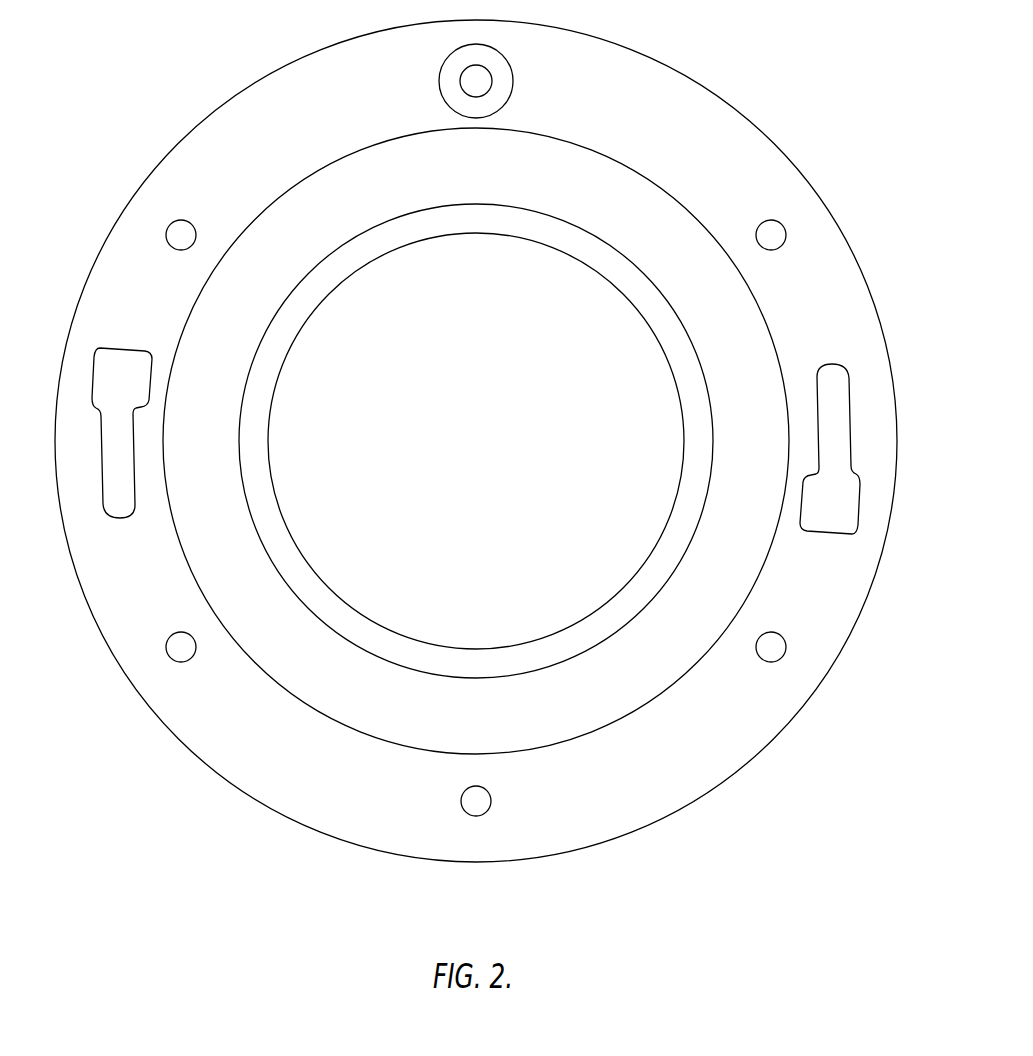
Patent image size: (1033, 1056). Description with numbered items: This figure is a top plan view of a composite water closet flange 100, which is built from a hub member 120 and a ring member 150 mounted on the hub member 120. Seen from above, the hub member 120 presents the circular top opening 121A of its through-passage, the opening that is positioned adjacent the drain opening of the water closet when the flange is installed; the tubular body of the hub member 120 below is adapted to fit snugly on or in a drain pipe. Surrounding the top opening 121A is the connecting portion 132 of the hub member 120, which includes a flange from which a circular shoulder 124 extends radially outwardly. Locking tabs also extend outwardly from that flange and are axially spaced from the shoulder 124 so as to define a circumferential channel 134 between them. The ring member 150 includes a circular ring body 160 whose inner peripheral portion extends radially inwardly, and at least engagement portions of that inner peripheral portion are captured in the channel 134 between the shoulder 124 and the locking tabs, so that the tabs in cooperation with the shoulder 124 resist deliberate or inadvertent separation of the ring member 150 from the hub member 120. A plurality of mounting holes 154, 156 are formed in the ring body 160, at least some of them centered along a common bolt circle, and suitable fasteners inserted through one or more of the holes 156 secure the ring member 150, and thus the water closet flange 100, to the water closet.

The water closet flange 100 is at (474, 467).
The hub member 120 is at (308, 556).
The top opening 121A is at (466, 533).
The circular shoulder 124 is at (315, 695).
The connecting portion 132 is at (410, 749).
The circumferential channel 134 is at (466, 533).
The ring member 150 is at (665, 818).
The mounting holes 154 is at (196, 232).
The mounting holes 156 is at (112, 518).
The circular ring body 160 is at (456, 436).